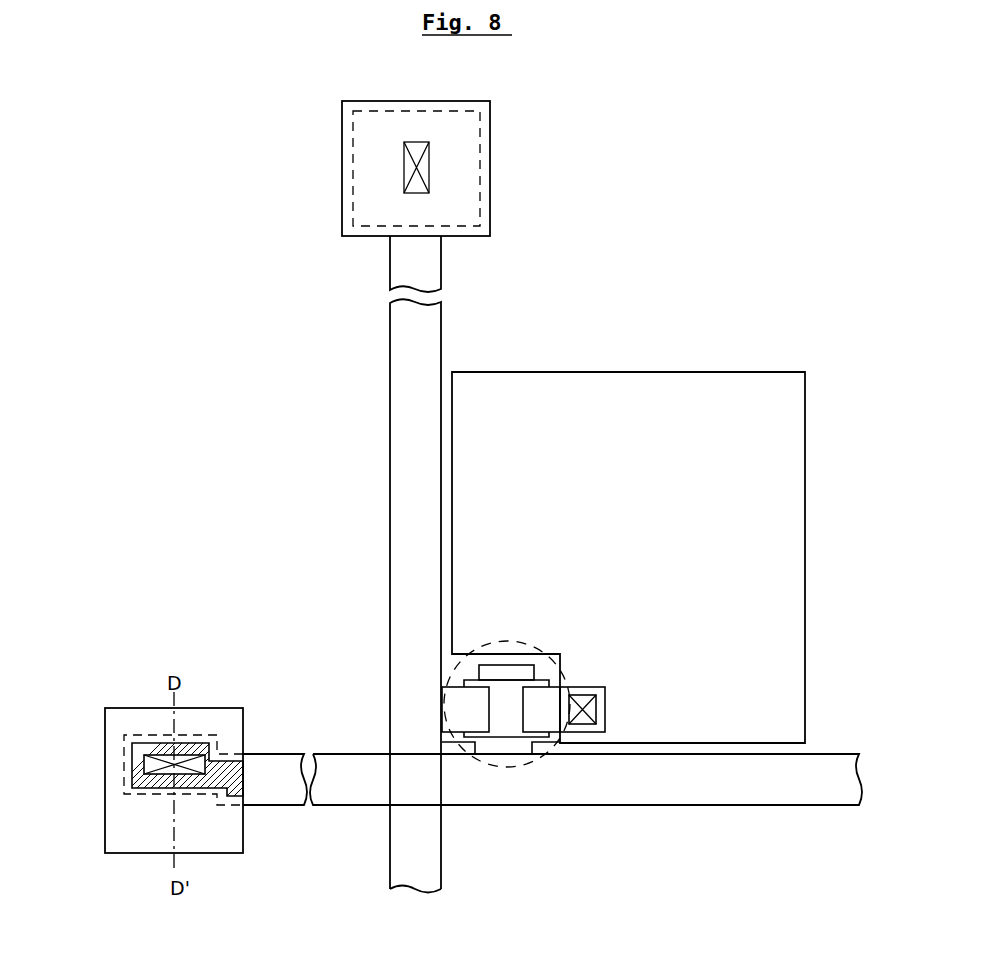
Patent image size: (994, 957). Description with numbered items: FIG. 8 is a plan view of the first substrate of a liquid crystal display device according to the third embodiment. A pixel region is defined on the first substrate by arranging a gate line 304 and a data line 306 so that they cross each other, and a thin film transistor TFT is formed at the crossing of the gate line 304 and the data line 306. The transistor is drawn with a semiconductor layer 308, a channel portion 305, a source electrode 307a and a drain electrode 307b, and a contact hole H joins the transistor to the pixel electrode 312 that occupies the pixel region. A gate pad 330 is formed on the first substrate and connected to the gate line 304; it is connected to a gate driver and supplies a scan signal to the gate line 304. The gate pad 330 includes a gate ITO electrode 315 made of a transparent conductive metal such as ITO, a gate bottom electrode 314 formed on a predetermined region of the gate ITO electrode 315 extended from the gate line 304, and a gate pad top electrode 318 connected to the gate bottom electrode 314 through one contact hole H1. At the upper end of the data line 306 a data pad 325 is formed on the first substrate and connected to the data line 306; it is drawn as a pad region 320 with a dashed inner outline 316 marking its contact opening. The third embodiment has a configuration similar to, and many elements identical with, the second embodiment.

The gate line 304 is at (702, 790).
The channel region 305 is at (505, 668).
The data line 306 is at (432, 341).
The source electrode 307a is at (475, 704).
The drain electrode 307b is at (535, 695).
The semiconductor layer 308 is at (510, 733).
The pixel electrode 312 is at (790, 572).
The gate bottom electrode 314 is at (122, 760).
The gate ITO electrode 315 is at (237, 764).
The pad contact hole 316 is at (478, 173).
The gate pad top electrode 318 is at (193, 706).
The pad region 320 is at (488, 137).
The data pad 325 is at (513, 208).
The gate pad 330 is at (223, 862).
The contact hole H is at (603, 707).
The contact hole H1 is at (162, 740).
The thin film transistor TFT is at (540, 760).